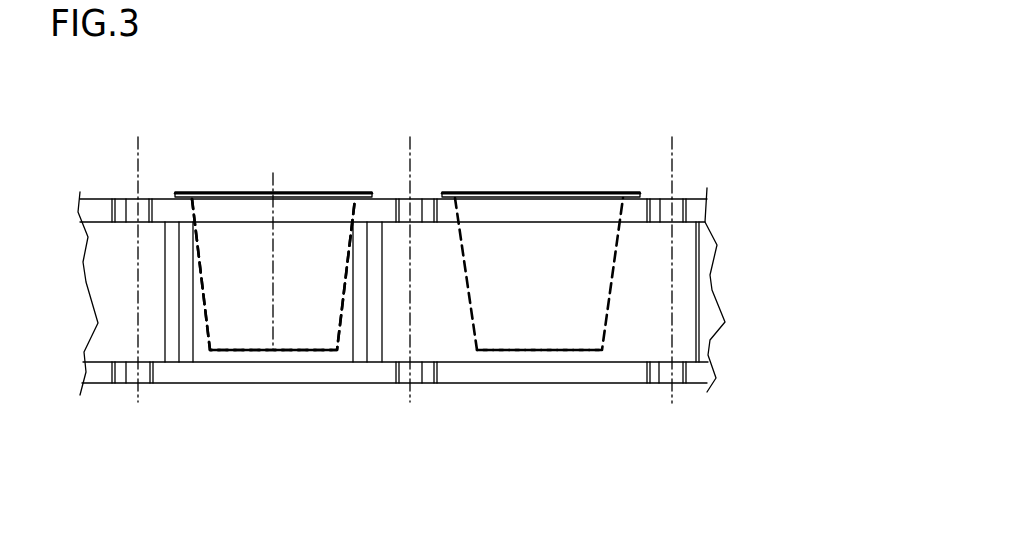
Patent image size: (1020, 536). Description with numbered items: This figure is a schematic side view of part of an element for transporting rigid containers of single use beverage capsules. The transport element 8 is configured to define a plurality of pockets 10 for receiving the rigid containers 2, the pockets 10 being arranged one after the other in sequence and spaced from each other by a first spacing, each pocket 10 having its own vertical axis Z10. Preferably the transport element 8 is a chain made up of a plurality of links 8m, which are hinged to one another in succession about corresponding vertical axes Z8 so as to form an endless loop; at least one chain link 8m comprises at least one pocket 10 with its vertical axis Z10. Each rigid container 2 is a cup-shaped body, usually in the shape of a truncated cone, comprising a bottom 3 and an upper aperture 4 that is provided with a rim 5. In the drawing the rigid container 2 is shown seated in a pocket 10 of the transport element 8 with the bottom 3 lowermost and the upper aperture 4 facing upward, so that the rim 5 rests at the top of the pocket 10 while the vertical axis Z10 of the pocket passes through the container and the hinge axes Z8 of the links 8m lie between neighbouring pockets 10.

The rigid container 2 is at (202, 285).
The bottom 3 is at (326, 330).
The upper aperture 4 is at (266, 186).
The rim 5 is at (183, 190).
The transport element 8 is at (440, 406).
The chain link 8m is at (120, 377).
The pocket 10 is at (208, 361).
The vertical axis of chain link hinge Z8 is at (409, 153).
The vertical axis of pocket Z10 is at (274, 250).